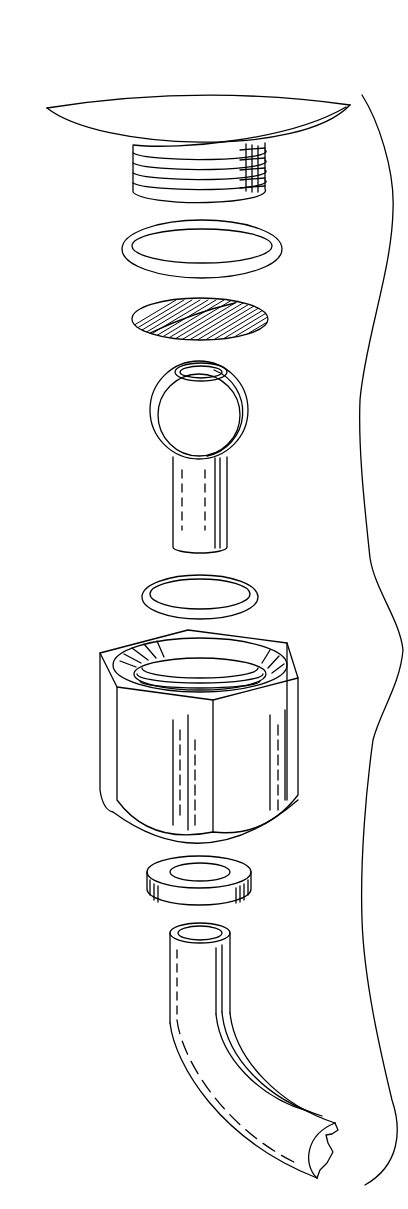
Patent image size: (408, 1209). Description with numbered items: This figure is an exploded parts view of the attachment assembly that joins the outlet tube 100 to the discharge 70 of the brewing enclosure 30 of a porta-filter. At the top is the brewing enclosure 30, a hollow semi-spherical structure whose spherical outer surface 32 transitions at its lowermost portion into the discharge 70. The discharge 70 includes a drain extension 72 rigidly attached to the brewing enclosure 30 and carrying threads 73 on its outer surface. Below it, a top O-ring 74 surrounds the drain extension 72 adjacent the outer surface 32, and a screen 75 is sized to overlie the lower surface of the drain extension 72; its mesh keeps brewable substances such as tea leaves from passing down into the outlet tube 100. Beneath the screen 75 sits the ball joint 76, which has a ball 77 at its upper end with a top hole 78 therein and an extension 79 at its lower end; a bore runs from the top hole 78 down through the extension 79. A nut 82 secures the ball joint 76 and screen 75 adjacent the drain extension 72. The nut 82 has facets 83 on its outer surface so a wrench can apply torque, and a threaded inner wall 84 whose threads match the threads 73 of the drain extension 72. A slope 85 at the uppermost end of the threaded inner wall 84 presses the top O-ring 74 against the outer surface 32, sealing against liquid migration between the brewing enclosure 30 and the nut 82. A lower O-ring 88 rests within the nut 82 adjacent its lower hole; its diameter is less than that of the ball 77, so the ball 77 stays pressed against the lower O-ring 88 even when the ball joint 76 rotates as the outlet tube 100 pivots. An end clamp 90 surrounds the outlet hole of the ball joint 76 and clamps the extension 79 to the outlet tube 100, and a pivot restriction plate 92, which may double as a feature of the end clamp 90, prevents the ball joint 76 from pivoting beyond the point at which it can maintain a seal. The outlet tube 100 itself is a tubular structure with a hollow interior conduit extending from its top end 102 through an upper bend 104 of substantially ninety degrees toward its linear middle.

The brewing enclosure 30 is at (262, 75).
The outer surface 32 is at (130, 112).
The discharge 70 is at (108, 154).
The drain extension 72 is at (265, 145).
The threads 73 is at (265, 162).
The top O-ring 74 is at (133, 227).
The screen 75 is at (155, 306).
The ball joint 76 is at (258, 452).
The ball 77 is at (167, 405).
The top hole 78 is at (216, 367).
The extension 79 is at (185, 483).
The nut 82 is at (318, 668).
The facets 83 is at (163, 770).
The threaded inner wall 84 is at (160, 672).
The slope 85 is at (133, 655).
The lower O-ring 88 is at (250, 590).
The end clamp 90 is at (248, 887).
The pivot restriction plate 92 is at (124, 892).
The outlet tube 100 is at (155, 1079).
The top end 102 is at (182, 958).
The upper bend 104 is at (247, 1065).